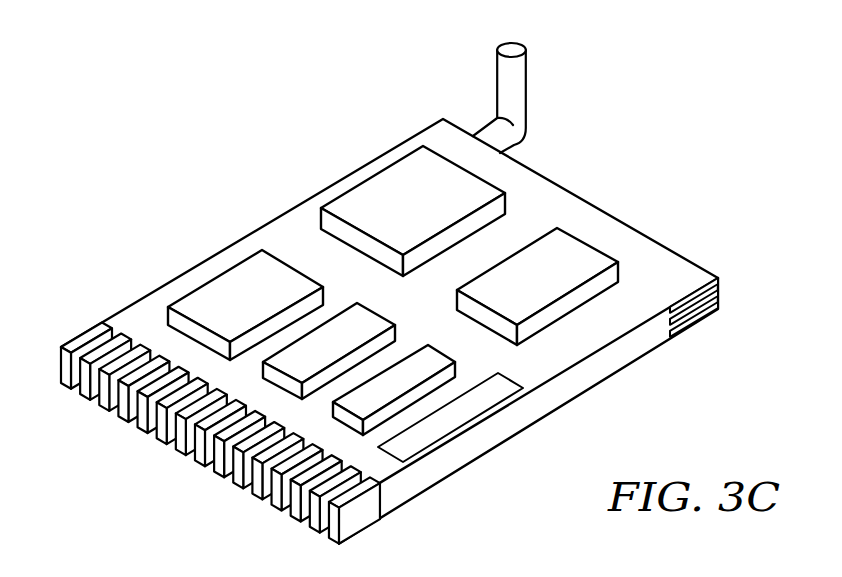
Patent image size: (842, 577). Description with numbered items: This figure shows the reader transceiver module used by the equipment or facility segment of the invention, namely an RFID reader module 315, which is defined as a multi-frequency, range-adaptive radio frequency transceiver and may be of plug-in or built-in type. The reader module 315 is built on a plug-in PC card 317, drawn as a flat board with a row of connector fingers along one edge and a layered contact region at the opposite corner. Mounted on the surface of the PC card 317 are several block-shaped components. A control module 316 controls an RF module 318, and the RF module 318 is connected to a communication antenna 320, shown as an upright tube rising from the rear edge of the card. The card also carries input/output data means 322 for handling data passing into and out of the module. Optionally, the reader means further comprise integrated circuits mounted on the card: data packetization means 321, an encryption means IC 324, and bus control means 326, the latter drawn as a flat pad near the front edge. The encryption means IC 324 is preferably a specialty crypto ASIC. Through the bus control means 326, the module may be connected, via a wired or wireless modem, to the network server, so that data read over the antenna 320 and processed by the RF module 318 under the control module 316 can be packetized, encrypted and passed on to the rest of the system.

The RFID reader module 315 is at (717, 277).
The control module 316 is at (565, 247).
The plug-in PC card 317 is at (663, 260).
The RF module 318 is at (378, 197).
The communication antenna 320 is at (518, 82).
The data packetization means 321 is at (225, 293).
The input/output data means 322 is at (382, 392).
The encryption means IC 324 is at (387, 323).
The bus control means 326 is at (488, 397).